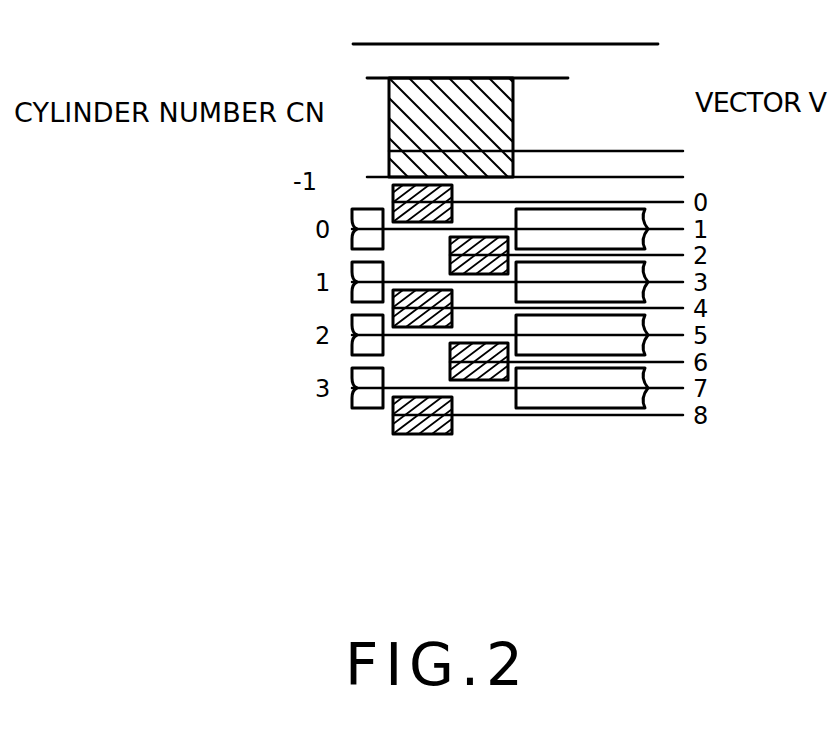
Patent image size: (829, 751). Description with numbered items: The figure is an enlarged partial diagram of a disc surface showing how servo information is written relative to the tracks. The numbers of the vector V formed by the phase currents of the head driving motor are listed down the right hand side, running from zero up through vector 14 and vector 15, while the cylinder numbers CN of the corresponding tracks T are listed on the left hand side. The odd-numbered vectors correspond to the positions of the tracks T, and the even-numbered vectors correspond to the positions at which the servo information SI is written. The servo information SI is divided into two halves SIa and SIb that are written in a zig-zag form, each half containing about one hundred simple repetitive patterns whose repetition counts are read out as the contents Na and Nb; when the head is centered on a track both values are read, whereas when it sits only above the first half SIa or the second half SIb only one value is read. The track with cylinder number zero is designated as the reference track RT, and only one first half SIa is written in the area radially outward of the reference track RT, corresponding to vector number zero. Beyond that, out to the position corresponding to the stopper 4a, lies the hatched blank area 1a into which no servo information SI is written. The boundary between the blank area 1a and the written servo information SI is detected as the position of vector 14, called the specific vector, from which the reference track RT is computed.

The blank area 1a is at (438, 100).
The stopper 4a is at (557, 78).
The reference track RT is at (367, 215).
The tracks T is at (367, 400).
The first half of servo information SIa is at (427, 428).
The second half of servo information SIb is at (492, 381).
The servo information SI is at (465, 360).
The vector 14 is at (583, 150).
The vector 15 is at (545, 177).